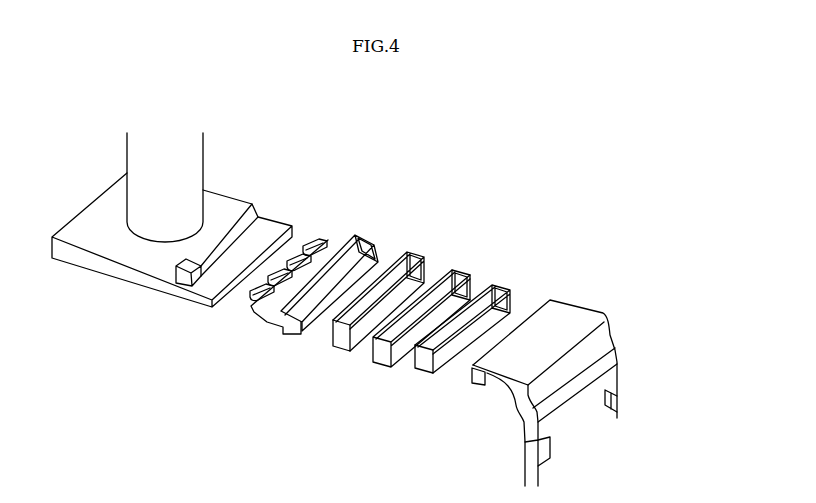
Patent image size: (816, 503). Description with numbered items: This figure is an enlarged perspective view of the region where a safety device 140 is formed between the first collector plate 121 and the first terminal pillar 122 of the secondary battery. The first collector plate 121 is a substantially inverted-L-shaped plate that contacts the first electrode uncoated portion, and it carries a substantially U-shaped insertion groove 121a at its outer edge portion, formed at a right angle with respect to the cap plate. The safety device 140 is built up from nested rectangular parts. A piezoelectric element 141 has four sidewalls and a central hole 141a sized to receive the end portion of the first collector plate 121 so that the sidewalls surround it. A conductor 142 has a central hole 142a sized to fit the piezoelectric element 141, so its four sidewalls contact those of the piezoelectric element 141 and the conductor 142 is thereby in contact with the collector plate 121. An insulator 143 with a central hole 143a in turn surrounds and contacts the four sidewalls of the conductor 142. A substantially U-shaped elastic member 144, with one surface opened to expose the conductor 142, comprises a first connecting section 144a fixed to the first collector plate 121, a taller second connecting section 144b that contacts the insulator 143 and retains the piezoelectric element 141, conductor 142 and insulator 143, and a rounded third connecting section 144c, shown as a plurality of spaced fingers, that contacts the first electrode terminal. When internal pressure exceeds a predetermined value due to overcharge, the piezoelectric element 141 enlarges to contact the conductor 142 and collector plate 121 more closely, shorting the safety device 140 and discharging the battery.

The first collector plate 121 is at (592, 393).
The insertion groove 121a is at (615, 392).
The first terminal pillar 122 is at (197, 156).
The safety device 140 is at (557, 233).
The piezoelectric element 141 is at (450, 356).
The hole 141a is at (440, 356).
The conductor 142 is at (464, 285).
The hole 142a is at (467, 285).
The insulator 143 is at (341, 330).
The hole 143a is at (357, 335).
The elastic member 144 is at (431, 172).
The first connecting section 144a is at (370, 242).
The second connecting section 144b is at (354, 238).
The third connecting section 144c is at (317, 240).